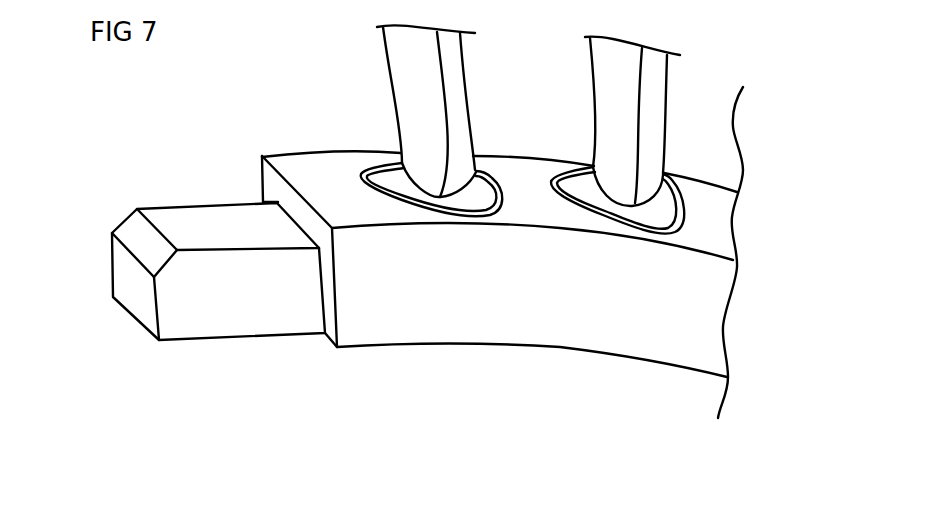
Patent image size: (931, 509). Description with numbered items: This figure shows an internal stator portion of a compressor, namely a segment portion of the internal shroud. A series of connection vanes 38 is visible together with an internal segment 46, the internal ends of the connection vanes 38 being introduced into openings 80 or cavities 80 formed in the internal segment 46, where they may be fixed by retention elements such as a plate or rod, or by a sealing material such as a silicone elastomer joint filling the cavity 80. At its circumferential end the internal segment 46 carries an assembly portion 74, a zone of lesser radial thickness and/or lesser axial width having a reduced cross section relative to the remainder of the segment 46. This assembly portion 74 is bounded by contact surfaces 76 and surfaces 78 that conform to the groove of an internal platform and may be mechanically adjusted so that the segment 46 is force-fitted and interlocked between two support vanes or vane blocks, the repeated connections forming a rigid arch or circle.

The connection vane 38 is at (400, 58).
The internal segment 46 is at (460, 353).
The assembly portion 74 is at (142, 142).
The contact surface 76 is at (262, 317).
The surface 78 is at (221, 230).
The opening 80 is at (367, 173).